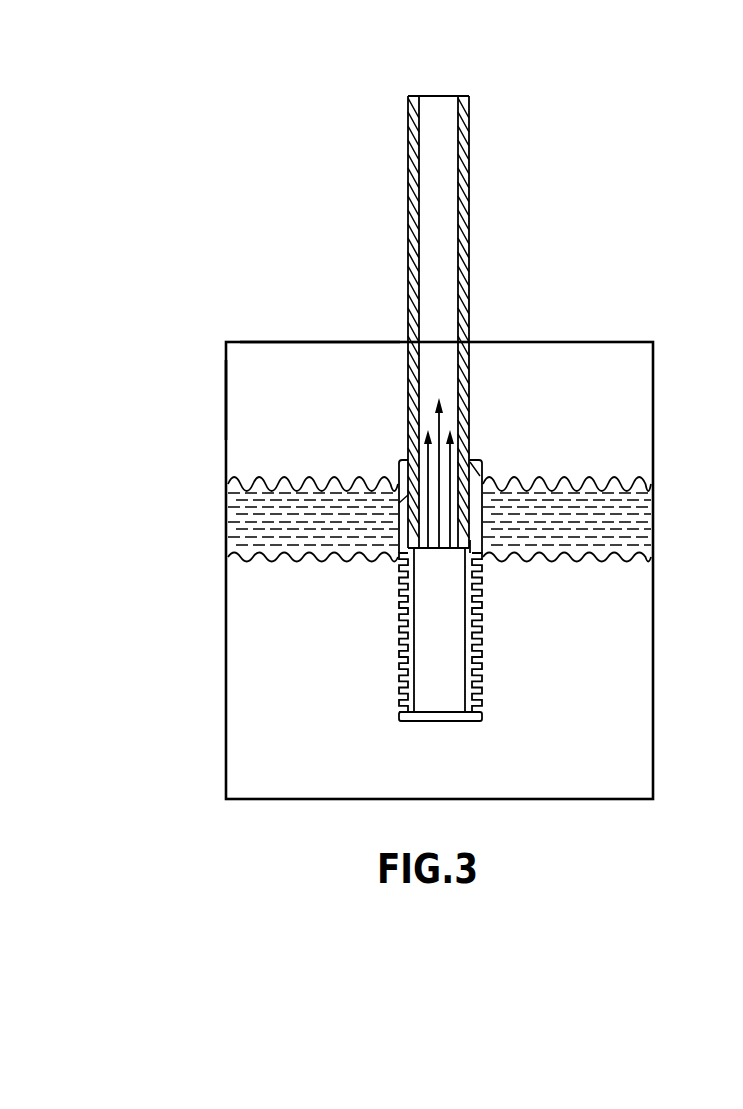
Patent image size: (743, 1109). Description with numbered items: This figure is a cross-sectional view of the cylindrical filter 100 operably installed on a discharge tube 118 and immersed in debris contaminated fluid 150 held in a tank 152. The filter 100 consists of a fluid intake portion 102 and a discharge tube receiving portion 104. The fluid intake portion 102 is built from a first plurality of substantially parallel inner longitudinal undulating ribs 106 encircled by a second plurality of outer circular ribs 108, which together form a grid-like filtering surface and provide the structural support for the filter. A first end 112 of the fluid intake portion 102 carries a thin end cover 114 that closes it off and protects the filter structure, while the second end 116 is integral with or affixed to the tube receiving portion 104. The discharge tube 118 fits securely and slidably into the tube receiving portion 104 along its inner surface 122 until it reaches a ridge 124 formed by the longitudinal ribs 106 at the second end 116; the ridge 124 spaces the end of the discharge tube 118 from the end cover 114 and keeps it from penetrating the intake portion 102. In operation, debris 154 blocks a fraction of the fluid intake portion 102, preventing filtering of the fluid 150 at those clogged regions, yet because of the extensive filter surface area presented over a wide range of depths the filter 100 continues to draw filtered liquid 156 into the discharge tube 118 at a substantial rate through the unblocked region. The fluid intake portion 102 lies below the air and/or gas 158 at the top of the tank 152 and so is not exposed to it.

The cylindrical filter 100 is at (427, 443).
The fluid intake portion 102 is at (429, 669).
The discharge tube receiving portion 104 is at (490, 462).
The inner longitudinal undulating ribs 106 is at (403, 712).
The outer circular ribs 108 is at (482, 617).
The first end of fluid intake portion 112 is at (433, 721).
The end cover 114 is at (460, 716).
The second end of fluid intake portion 116 is at (406, 540).
The discharge tube 118 is at (467, 202).
The inner surface of tube receiving portion 122 is at (410, 470).
The ridge 124 is at (474, 545).
The debris contaminated fluid 150 is at (586, 754).
The tank 152 is at (226, 418).
The debris 154 is at (247, 537).
The filtered liquid 156 is at (440, 668).
The air and/or gas 158 is at (286, 383).